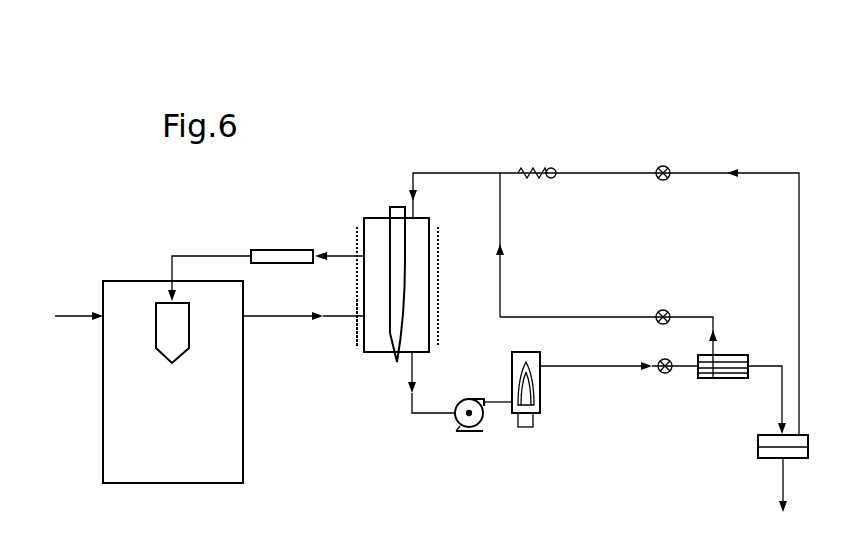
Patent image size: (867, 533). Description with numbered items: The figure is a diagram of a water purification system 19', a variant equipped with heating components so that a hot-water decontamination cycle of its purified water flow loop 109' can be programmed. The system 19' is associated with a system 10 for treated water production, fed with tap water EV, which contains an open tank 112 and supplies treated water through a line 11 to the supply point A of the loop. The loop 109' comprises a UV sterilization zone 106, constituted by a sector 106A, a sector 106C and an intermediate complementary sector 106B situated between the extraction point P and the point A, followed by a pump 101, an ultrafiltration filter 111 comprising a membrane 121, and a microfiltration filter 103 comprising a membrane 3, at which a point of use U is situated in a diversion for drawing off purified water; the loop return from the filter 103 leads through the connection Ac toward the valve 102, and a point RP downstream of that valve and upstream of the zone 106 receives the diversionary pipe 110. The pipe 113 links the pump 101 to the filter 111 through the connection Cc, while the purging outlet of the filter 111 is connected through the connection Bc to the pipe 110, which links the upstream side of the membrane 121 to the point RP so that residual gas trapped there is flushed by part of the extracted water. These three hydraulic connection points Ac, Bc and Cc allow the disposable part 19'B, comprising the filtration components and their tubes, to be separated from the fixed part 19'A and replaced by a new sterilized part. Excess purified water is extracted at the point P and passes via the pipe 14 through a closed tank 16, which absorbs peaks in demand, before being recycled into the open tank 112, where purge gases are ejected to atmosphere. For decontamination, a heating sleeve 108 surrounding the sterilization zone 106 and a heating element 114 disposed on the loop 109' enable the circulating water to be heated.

The water EV is at (60, 317).
The system for treated water production 10 is at (103, 352).
The open tank 112 is at (156, 337).
The closed tank 16 is at (278, 249).
The pipe 14 is at (355, 252).
The extraction point P is at (357, 248).
The supply point A is at (357, 320).
The exhaust line to separation unit 11 is at (298, 318).
The UV sterilization zone 106 is at (432, 285).
The intermediate complementary sector 106B is at (372, 277).
The sector 106C is at (409, 216).
The sector 106A is at (423, 345).
The heating sleeve 108 is at (440, 247).
The purified water flow loop 109' is at (599, 275).
The point RP is at (502, 170).
The valve 102 is at (550, 167).
The hydraulic connection point Ac is at (665, 163).
The diversionary pipe 110 is at (598, 317).
The hydraulic connection point Bc is at (665, 309).
The ultrafiltration filter 111 is at (733, 355).
The membrane 121 is at (715, 379).
The pipe 113 is at (598, 367).
The hydraulic connection point Cc is at (665, 374).
The heating element 114 is at (542, 407).
The pump 101 is at (472, 430).
The microfiltration filter 103 is at (795, 458).
The membrane 3 is at (768, 458).
The point of use U is at (780, 475).
The system 19' is at (647, 45).
The fixed part 19'A is at (573, 70).
The removable part 19'B is at (730, 70).